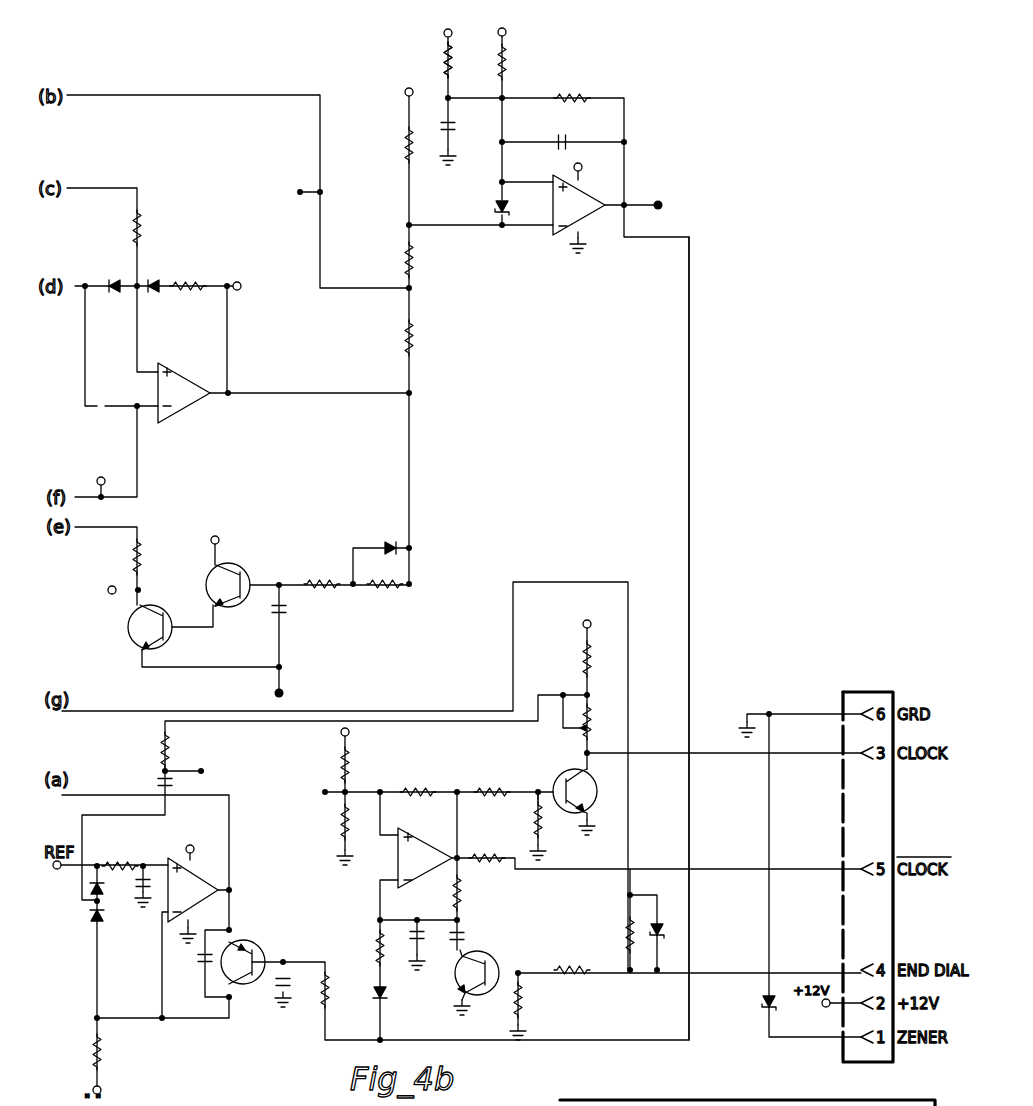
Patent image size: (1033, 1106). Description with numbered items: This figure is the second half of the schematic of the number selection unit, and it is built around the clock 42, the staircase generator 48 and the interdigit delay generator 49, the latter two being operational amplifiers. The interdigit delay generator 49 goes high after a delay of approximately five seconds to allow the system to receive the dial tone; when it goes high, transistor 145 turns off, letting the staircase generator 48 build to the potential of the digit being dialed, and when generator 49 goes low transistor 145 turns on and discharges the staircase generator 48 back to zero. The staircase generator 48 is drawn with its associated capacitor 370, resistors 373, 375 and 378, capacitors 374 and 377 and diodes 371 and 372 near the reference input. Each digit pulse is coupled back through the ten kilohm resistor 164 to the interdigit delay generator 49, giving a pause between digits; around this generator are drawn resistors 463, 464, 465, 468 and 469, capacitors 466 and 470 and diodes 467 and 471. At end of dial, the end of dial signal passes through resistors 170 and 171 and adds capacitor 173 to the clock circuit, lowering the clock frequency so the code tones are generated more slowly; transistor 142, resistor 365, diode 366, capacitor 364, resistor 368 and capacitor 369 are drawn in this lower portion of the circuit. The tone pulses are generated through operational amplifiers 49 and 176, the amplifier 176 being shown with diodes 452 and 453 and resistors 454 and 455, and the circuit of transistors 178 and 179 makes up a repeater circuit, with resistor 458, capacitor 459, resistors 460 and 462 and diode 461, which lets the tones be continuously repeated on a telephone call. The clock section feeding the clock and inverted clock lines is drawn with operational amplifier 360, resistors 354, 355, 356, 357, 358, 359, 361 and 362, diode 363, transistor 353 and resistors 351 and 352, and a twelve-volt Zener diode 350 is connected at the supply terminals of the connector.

The clock 42 is at (703, 668).
The staircase generator 48 is at (196, 858).
The interdigit delay generator 49 is at (556, 228).
The transistor 142 is at (478, 994).
The transistor 145 is at (252, 946).
The resistor 164 is at (409, 248).
The resistor 170 is at (629, 935).
The resistor 171 is at (572, 966).
The capacitor 173 is at (465, 937).
The operational amplifier 176 is at (200, 342).
The transistor 178 is at (232, 566).
The transistor 179 is at (128, 630).
The Zener diode 350 is at (766, 1006).
The resistor 351 is at (581, 640).
The resistor 352 is at (592, 724).
The transistor 353 is at (596, 818).
The resistor 354 is at (558, 757).
The resistor 355 is at (494, 788).
The resistor 356 is at (420, 788).
The resistor 357 is at (340, 765).
The resistor 358 is at (340, 822).
The resistor 359 is at (507, 843).
The operational amplifier 360 is at (394, 870).
The resistor 361 is at (461, 892).
The resistor 362 is at (380, 942).
The diode 363 is at (375, 988).
The capacitor 364 is at (430, 948).
The resistor 365 is at (523, 1000).
The diode 366 is at (659, 926).
The resistor 368 is at (318, 1002).
The capacitor 369 is at (276, 992).
The capacitor 370 is at (208, 946).
The diode 371 is at (91, 898).
The diode 372 is at (88, 928).
The resistor 373 is at (162, 840).
The capacitor 374 is at (136, 894).
The resistor 375 is at (103, 1052).
The capacitor 377 is at (158, 782).
The resistor 378 is at (162, 752).
The diode 452 is at (114, 276).
The diode 453 is at (153, 276).
The resistor 454 is at (141, 226).
The resistor 455 is at (190, 278).
The resistor 458 is at (172, 546).
The capacitor 459 is at (284, 616).
The resistor 460 is at (315, 578).
The diode 461 is at (386, 540).
The resistor 462 is at (388, 592).
The resistor 463 is at (414, 340).
The resistor 464 is at (409, 128).
The resistor 465 is at (447, 52).
The capacitor 466 is at (456, 135).
The diode 467 is at (447, 66).
The resistor 468 is at (506, 64).
The resistor 469 is at (590, 92).
The capacitor 470 is at (572, 138).
The diode 471 is at (497, 212).